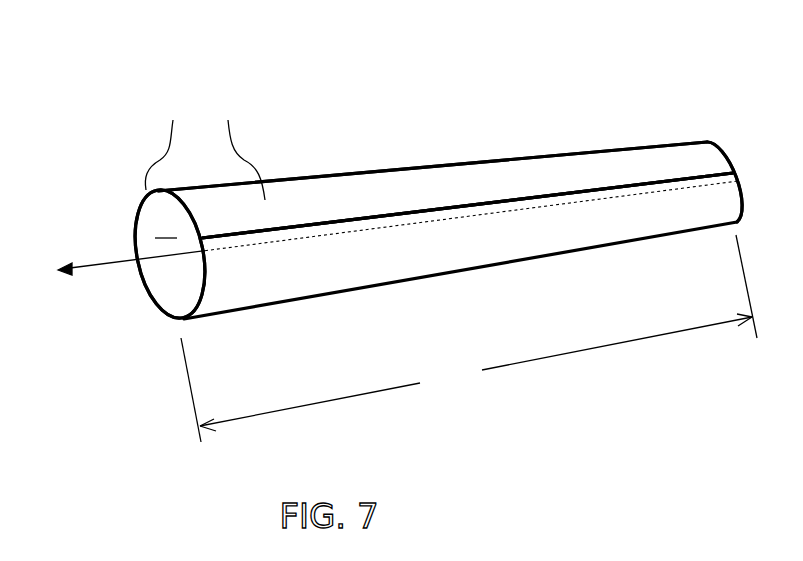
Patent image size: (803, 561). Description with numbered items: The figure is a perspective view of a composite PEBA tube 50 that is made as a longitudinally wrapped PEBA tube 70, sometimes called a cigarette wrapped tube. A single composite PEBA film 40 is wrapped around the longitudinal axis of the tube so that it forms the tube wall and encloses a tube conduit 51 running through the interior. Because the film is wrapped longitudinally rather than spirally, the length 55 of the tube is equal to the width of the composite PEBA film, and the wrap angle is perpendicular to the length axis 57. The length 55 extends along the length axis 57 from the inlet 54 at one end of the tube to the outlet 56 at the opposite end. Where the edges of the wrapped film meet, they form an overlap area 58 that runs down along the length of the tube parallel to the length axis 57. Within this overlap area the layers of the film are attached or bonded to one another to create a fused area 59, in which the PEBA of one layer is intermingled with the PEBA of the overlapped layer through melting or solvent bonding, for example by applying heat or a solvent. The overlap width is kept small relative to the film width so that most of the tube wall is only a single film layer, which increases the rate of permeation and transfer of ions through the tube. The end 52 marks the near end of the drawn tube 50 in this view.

The composite PEBA tube 50 is at (646, 132).
The first end of tube 52 is at (162, 143).
The composite PEBA film 40 is at (237, 148).
The overlap area 58 is at (408, 226).
The longitudinally wrapped PEBA tube 70 is at (452, 186).
The fused area 59 is at (590, 197).
The outlet 56 is at (733, 174).
The tube conduit 51 is at (157, 218).
The inlet 54 is at (150, 238).
The length axis 57 is at (103, 266).
The length 55 is at (469, 338).